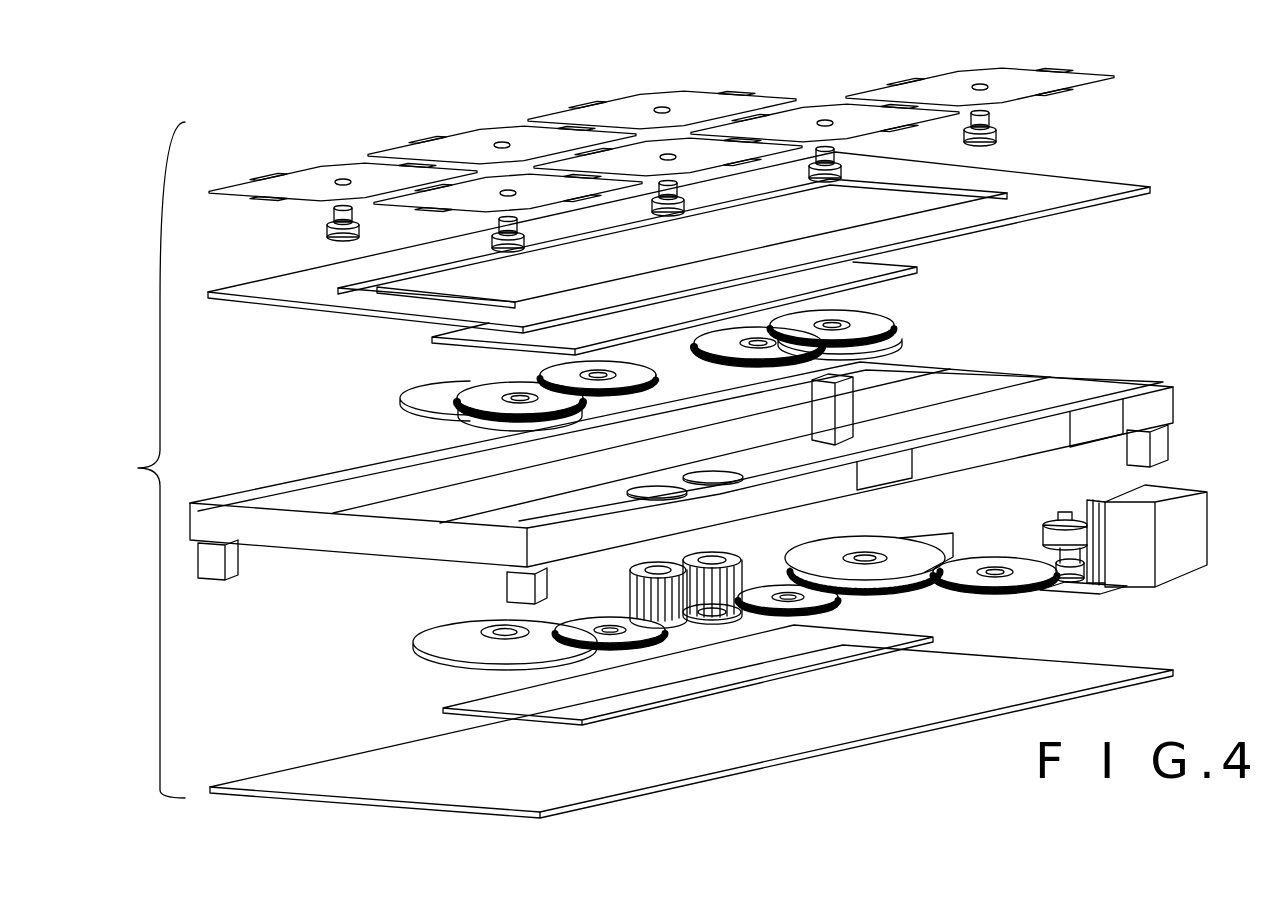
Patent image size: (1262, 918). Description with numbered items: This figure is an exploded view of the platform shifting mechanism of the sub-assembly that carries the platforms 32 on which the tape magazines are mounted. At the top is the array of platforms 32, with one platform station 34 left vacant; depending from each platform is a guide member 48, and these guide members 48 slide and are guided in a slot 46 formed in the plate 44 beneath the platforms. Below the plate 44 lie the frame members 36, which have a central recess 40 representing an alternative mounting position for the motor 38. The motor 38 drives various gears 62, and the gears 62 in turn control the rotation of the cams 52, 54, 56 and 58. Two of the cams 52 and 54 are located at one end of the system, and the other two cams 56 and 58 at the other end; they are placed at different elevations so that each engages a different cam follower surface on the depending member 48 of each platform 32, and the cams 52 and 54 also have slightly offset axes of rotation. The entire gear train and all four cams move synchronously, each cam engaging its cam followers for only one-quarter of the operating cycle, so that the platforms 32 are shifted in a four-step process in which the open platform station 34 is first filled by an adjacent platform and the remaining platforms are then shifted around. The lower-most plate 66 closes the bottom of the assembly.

The platform 32 is at (567, 118).
The platform station 34 is at (818, 95).
The frame member 36 is at (660, 531).
The motor 38 is at (1135, 555).
The central recess 40 is at (890, 470).
The plate 44 is at (1060, 185).
The slot 46 is at (950, 197).
The guide member 48 is at (335, 215).
The cam 52 is at (432, 395).
The cam 54 is at (450, 645).
The cam 56 is at (900, 355).
The cam 58 is at (880, 540).
The gear 62 is at (700, 350).
The lower-most plate 66 is at (695, 748).